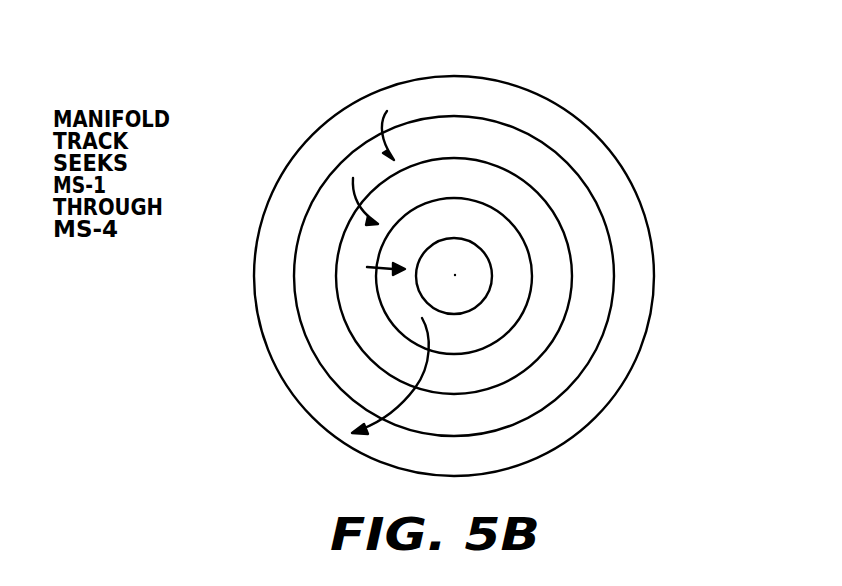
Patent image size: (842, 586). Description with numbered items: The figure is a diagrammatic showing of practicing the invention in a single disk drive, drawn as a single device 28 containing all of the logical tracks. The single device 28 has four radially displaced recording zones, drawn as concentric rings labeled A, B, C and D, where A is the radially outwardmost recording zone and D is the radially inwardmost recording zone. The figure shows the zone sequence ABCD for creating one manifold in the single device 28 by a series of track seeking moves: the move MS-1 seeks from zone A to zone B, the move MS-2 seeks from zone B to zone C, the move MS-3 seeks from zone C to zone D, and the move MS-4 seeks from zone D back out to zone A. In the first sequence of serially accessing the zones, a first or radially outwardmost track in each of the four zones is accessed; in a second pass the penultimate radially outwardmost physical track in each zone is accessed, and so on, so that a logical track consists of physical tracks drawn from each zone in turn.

The single device 28 is at (621, 167).
The track seeking move from zone A to zone B MS-1 is at (404, 107).
The track seeking move from zone B to zone C MS-2 is at (368, 172).
The track seeking move from zone C to zone D MS-3 is at (360, 285).
The track seeking move from zone D to zone A MS-4 is at (395, 407).